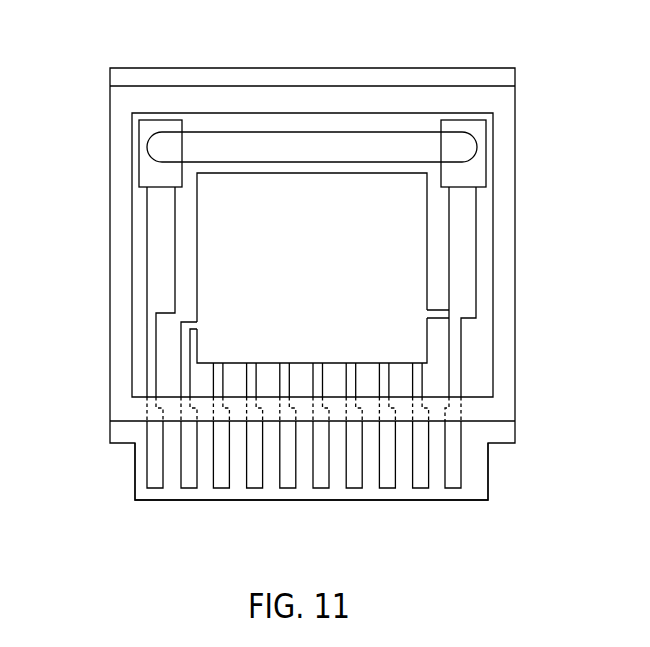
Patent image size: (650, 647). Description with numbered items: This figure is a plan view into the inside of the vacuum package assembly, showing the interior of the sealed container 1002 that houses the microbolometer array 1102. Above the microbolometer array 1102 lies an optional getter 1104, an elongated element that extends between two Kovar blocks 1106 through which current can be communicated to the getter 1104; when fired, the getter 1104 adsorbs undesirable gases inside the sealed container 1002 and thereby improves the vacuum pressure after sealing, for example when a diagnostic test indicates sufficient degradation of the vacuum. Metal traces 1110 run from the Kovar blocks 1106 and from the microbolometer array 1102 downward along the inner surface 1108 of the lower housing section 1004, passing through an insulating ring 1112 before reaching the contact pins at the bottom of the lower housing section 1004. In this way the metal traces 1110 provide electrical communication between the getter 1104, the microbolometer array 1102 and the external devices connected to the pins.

The sealed container 1002 is at (515, 252).
The lower housing section 1004 is at (135, 480).
The microbolometer array 1102 is at (332, 262).
The getter 1104 is at (295, 143).
The Kovar blocks 1106 is at (183, 126).
The inner surface 1108 is at (185, 267).
The metal traces 1110 is at (152, 363).
The insulating ring 1112 is at (120, 138).